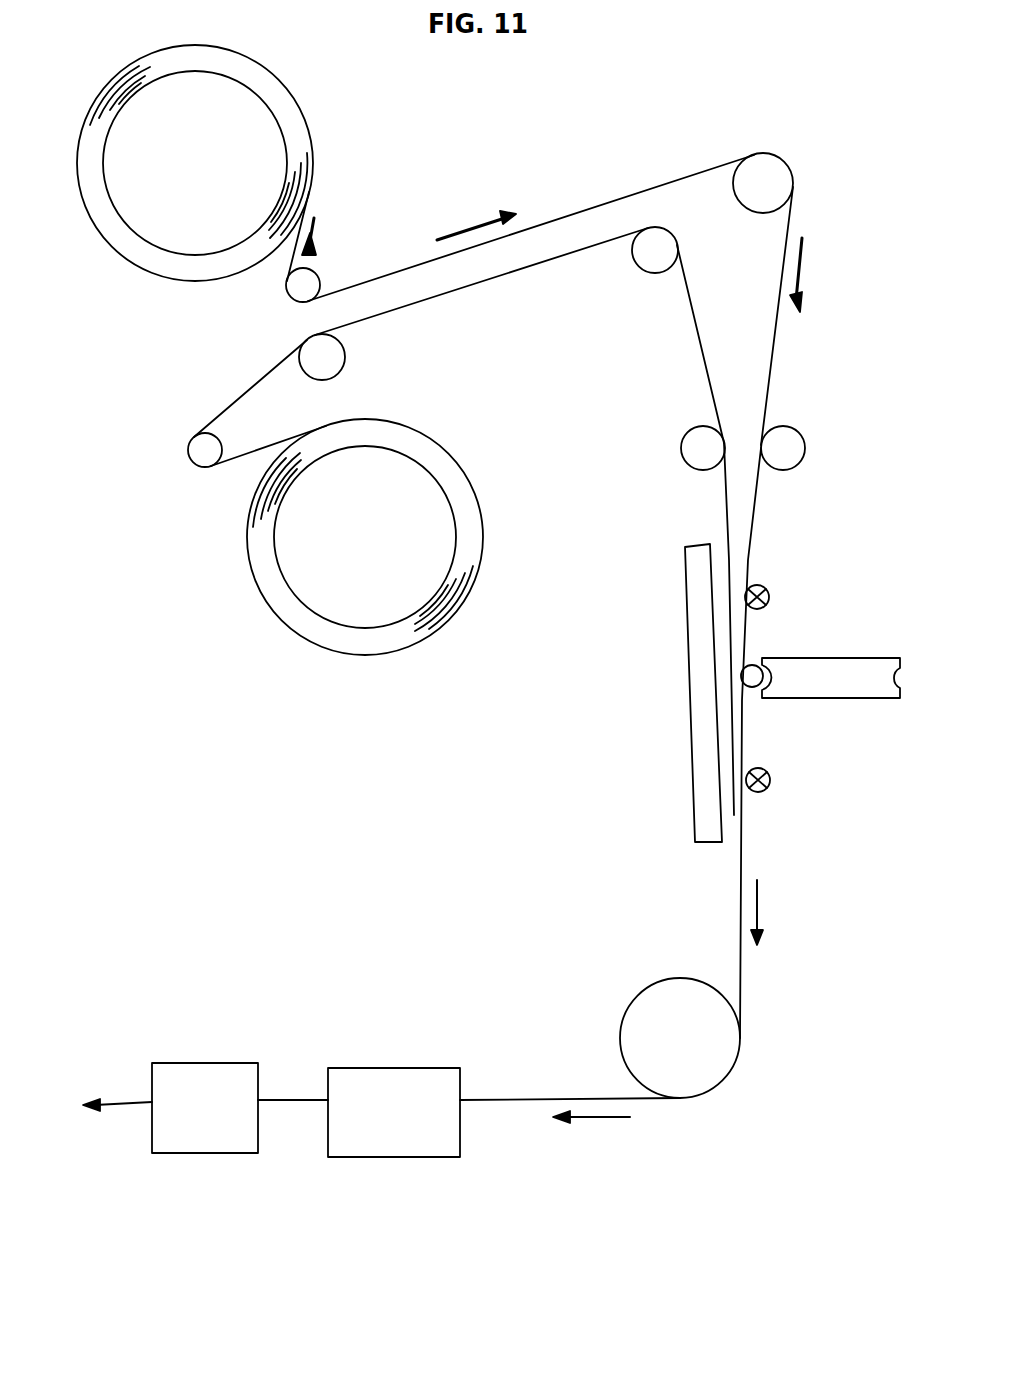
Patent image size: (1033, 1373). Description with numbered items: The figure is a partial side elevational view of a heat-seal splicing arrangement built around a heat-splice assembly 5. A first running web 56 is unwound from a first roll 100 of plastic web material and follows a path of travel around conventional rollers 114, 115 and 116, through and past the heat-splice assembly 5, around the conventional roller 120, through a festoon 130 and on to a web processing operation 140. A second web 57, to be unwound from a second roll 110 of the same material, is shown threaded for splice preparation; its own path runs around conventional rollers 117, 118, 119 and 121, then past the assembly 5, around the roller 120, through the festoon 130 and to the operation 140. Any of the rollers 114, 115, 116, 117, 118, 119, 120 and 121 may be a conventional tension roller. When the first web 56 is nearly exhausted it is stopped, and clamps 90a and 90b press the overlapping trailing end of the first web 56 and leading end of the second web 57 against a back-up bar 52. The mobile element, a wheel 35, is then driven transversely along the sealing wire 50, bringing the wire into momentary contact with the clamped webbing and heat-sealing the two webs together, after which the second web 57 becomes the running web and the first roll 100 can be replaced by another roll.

The first roll 100 is at (213, 178).
The second roll 110 is at (383, 545).
The conventional roller 114 is at (320, 278).
The conventional roller 115 is at (790, 175).
The conventional roller 116 is at (798, 448).
The conventional roller 117 is at (205, 455).
The conventional roller 118 is at (345, 352).
The conventional roller 119 is at (660, 268).
The conventional roller 121 is at (686, 448).
The conventional roller 120 is at (699, 1054).
The festoon 130 is at (414, 1129).
The web processing operation 140 is at (220, 1126).
The first running web 56 is at (588, 210).
The second web 57 is at (468, 285).
The back-up bar 52 is at (693, 765).
The sealing wire 50 is at (752, 690).
The wheel 35 is at (828, 658).
The heat-splice assembly 5 is at (857, 708).
The clamp 90a is at (768, 590).
The clamp 90b is at (770, 785).